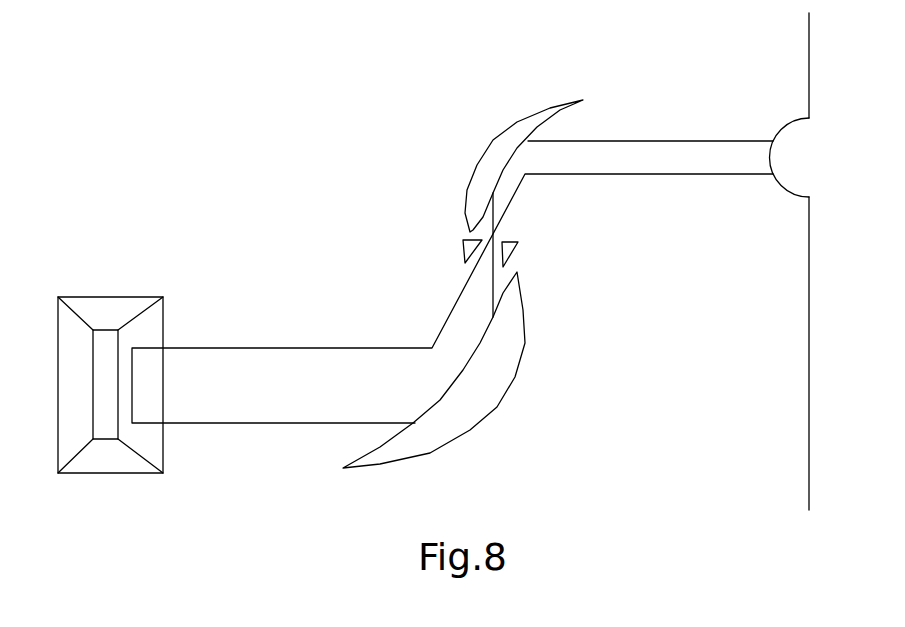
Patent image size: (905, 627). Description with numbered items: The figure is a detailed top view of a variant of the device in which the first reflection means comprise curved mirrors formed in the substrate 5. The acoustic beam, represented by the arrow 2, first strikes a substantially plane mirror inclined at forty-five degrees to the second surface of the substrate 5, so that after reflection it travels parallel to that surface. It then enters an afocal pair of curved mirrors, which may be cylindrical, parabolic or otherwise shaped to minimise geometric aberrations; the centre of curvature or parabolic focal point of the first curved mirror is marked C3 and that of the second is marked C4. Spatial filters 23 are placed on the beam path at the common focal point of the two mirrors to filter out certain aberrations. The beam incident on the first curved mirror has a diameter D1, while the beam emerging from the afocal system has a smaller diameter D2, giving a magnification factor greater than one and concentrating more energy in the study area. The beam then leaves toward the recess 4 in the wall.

The acoustic beam 2 is at (335, 355).
The spatial filters 23 is at (463, 243).
The semicircular recess 4 is at (783, 188).
The substrate 5 is at (795, 365).
The diameter of the incident acoustic beam D1 is at (258, 349).
The diameter of the emergent acoustic beam D2 is at (714, 173).
The centre of curvature or parabolic focal point of mirror 21 C3 is at (221, 165).
The centre of curvature or parabolic focal point of mirror 22 C4 is at (618, 255).